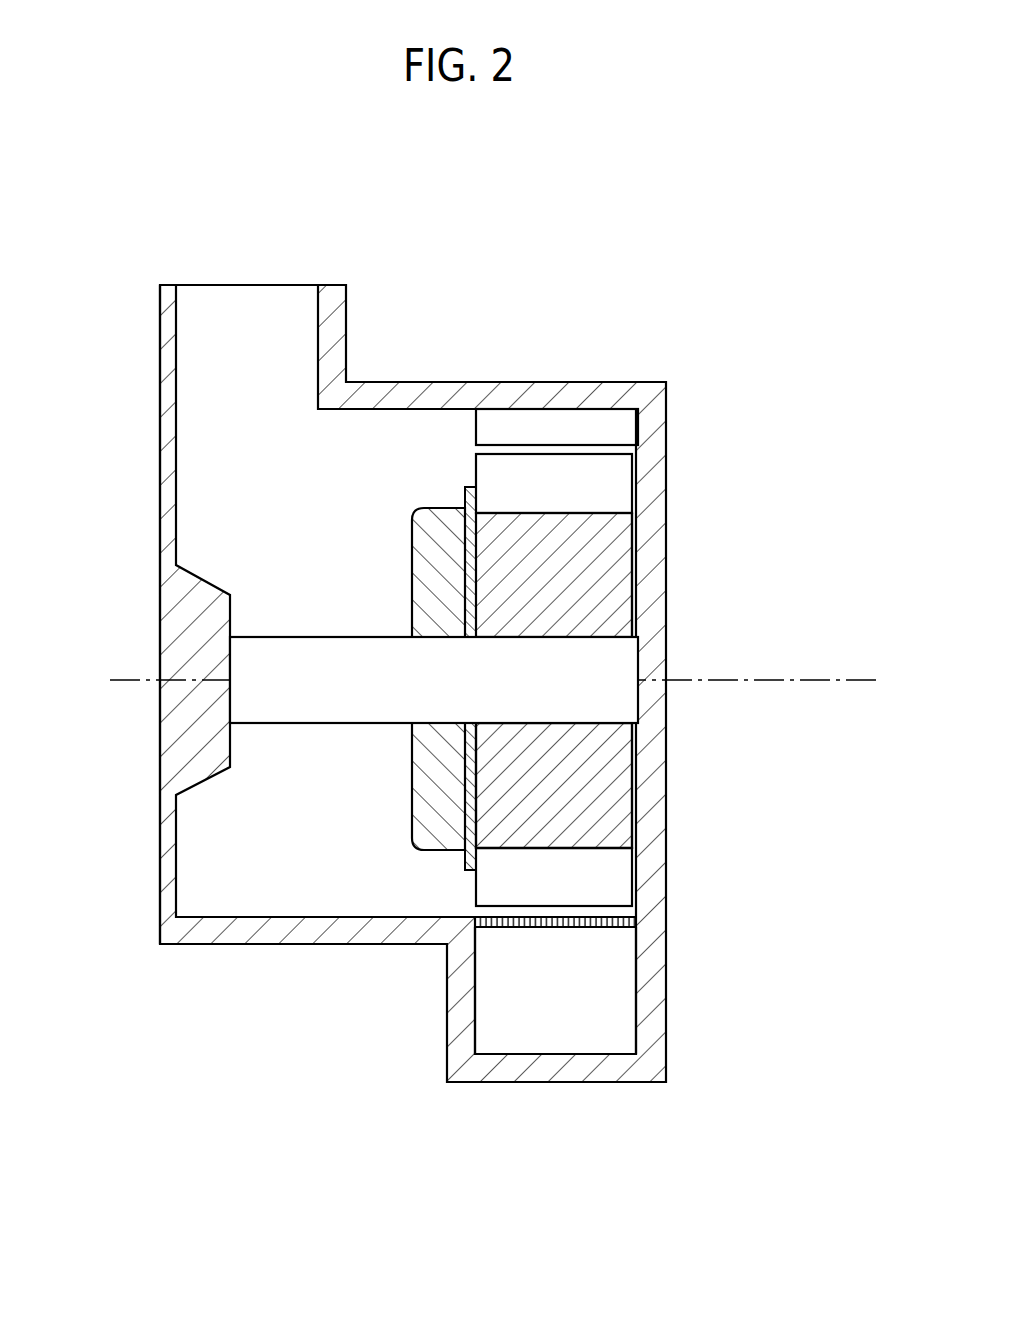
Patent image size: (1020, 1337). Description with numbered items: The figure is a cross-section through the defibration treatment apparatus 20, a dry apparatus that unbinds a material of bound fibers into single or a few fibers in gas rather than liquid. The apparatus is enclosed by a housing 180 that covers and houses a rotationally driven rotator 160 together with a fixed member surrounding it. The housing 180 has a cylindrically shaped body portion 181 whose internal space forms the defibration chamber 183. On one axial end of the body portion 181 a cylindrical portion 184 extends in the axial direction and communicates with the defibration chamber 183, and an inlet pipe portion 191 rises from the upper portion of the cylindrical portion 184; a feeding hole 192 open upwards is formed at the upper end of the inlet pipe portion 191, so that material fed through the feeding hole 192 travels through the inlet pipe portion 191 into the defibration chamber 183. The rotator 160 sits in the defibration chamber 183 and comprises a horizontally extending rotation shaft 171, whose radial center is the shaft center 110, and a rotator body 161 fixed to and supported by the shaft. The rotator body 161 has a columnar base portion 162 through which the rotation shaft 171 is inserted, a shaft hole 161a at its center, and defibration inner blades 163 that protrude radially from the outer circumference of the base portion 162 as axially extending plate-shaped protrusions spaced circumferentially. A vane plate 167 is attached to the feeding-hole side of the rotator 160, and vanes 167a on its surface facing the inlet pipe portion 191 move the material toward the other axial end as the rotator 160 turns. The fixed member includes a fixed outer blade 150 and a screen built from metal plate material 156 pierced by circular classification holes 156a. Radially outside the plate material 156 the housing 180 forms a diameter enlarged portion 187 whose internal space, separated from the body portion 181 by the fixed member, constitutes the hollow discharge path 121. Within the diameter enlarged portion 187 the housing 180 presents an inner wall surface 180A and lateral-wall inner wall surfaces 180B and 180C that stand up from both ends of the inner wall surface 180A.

The defibration treatment apparatus 20 is at (496, 251).
The shaft center 110 is at (824, 680).
The discharge path 121 is at (571, 1023).
The fixed outer blade 150 is at (618, 427).
The plate material 156 is at (612, 918).
The classification hole 156a is at (588, 943).
The rotator 160 is at (633, 568).
The rotator body 161 is at (606, 798).
The shaft hole 161a is at (608, 723).
The base portion 162 is at (593, 833).
The defibration inner blade 163 is at (593, 487).
The vane plate 167 is at (472, 872).
The vane 167a is at (423, 853).
The rotation shaft 171 is at (593, 665).
The housing 180 is at (457, 381).
The inner wall surface 180A is at (475, 980).
The lateral-wall inner wall surface 180B is at (503, 1054).
The lateral-wall inner wall surface 180C is at (636, 980).
The body portion 181 is at (522, 393).
The defibration chamber 183 is at (402, 803).
The cylindrical portion 184 is at (218, 944).
The diameter enlarged portion 187 is at (560, 1070).
The inlet pipe portion 191 is at (160, 358).
The feeding hole 192 is at (176, 285).